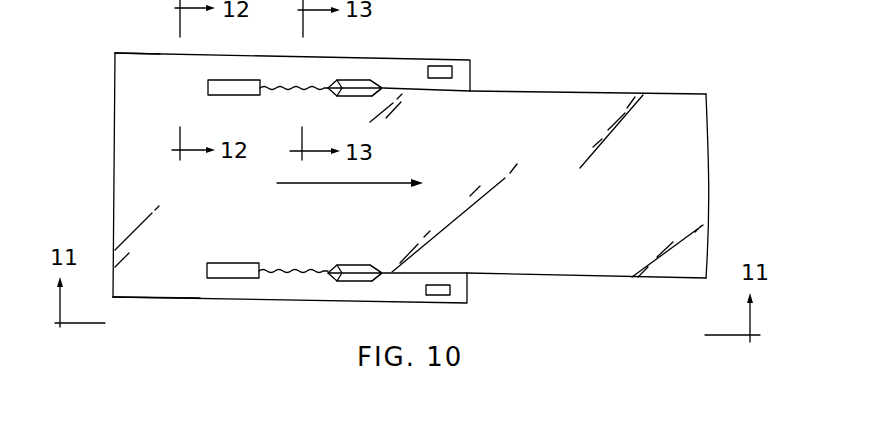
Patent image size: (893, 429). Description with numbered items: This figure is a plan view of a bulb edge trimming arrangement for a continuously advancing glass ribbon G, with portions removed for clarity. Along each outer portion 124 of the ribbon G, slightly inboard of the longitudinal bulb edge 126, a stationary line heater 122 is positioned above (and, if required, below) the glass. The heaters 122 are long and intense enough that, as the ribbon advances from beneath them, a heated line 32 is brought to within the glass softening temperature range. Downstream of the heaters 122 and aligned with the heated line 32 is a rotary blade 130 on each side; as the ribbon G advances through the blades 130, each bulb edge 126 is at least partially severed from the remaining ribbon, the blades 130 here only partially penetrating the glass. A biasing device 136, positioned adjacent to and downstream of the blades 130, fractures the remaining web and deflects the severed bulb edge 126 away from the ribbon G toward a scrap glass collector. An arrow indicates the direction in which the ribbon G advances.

The glass ribbon G is at (615, 92).
The outer portions 124 is at (412, 66).
The bulb edge 126 is at (121, 52).
The line heater 122 is at (218, 80).
The heated line 32 is at (302, 88).
The rotary blade 130 is at (344, 79).
The biasing device 136 is at (452, 72).